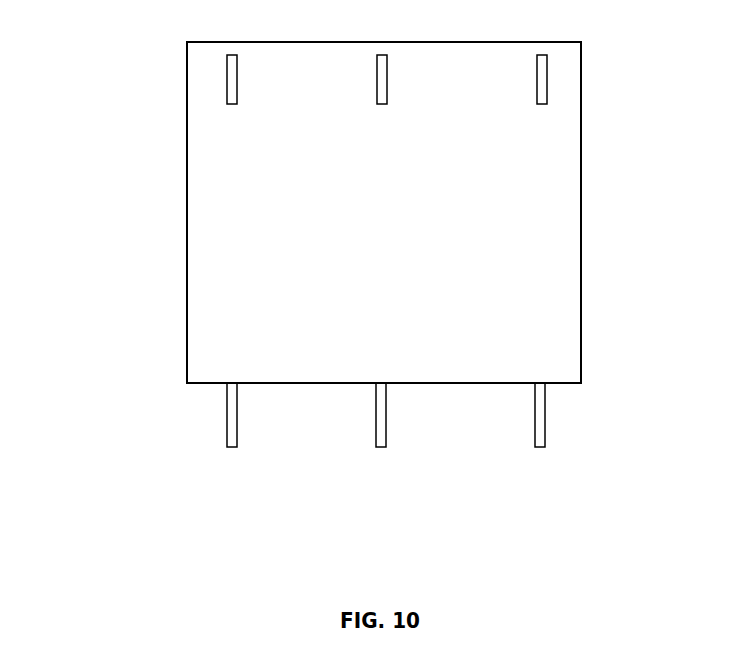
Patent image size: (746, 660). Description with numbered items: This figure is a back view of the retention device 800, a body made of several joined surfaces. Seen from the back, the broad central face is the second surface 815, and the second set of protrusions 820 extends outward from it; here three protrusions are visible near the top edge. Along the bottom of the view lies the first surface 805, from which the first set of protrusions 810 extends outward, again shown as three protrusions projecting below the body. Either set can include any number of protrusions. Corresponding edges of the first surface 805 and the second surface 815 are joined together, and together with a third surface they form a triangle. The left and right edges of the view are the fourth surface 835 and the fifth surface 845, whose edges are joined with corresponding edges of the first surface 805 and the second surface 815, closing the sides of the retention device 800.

The retention device 800 is at (343, 301).
The first surface 805 is at (215, 392).
The first set of protrusions 810 is at (232, 450).
The second surface 815 is at (384, 212).
The second set of protrusions 820 is at (545, 47).
The fourth surface 835 is at (179, 251).
The fifth surface 845 is at (589, 249).